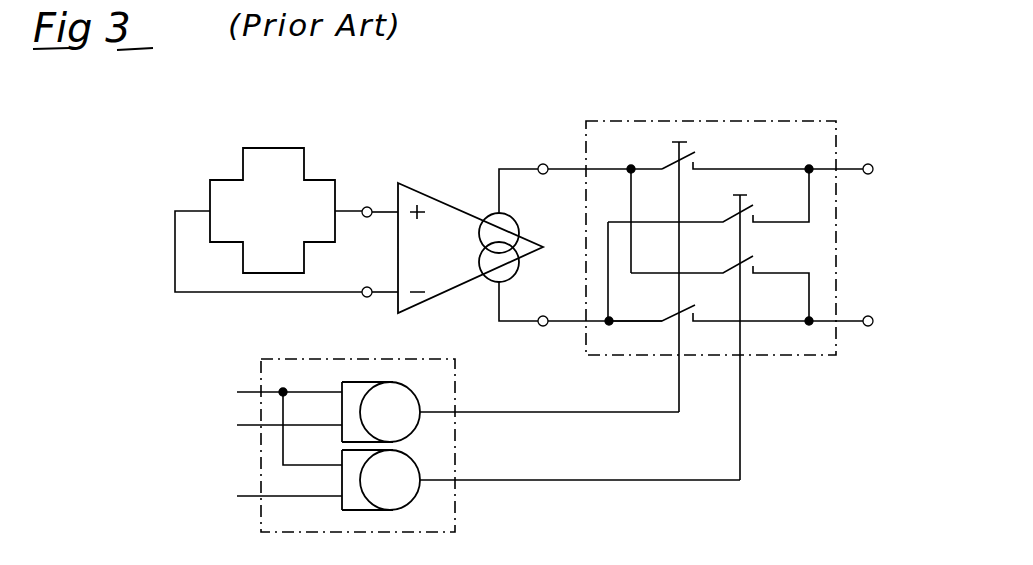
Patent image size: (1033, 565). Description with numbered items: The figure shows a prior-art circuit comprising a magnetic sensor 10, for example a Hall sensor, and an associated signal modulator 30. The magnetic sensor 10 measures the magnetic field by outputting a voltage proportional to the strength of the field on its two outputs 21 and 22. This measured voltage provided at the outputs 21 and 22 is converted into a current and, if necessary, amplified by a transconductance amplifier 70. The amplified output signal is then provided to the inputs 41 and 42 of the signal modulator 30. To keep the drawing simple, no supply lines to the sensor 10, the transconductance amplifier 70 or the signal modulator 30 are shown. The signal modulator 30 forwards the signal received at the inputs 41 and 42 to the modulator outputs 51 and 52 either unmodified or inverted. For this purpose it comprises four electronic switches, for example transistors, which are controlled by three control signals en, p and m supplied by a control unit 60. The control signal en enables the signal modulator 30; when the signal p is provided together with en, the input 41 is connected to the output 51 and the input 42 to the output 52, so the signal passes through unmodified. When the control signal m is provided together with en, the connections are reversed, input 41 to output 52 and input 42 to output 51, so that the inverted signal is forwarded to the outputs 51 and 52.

The magnetic sensor 10 is at (272, 152).
The output 21 is at (368, 206).
The output 22 is at (368, 287).
The transconductance amplifier 70 is at (446, 206).
The input 41 is at (543, 163).
The input 42 is at (543, 327).
The signal modulator 30 is at (803, 357).
The modulator output 51 is at (868, 163).
The modulator output 52 is at (868, 327).
The control unit 60 is at (445, 518).